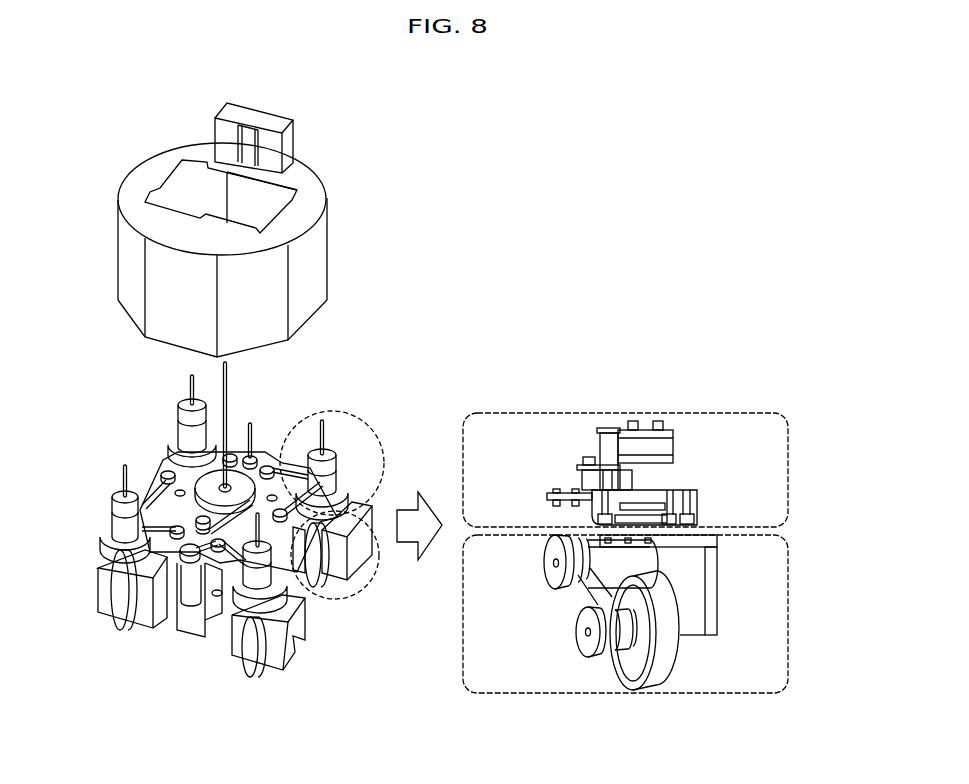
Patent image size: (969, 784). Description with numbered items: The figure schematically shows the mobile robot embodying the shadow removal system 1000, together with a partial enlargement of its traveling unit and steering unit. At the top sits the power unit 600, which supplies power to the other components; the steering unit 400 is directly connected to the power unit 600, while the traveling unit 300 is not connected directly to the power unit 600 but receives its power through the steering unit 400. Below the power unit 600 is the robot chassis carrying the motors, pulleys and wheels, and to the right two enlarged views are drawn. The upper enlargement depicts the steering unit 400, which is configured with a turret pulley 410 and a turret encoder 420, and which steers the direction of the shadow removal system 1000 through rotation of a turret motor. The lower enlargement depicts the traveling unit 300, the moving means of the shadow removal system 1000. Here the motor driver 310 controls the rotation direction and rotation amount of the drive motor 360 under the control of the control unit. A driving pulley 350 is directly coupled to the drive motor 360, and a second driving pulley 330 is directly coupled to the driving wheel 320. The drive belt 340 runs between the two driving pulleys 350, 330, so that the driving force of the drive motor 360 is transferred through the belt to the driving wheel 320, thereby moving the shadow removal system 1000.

The shadow removal system 1000 is at (72, 119).
The power unit 600 is at (308, 265).
The steering unit 400 is at (792, 462).
The turret pulley 410 is at (695, 488).
The turret encoder 420 is at (588, 480).
The traveling unit 300 is at (792, 600).
The motor driver 310 is at (702, 585).
The driving wheel 320 is at (672, 667).
The driving pulley 330 is at (583, 643).
The drive belt 340 is at (583, 600).
The driving pulley 350 is at (548, 555).
The drive motor 360 is at (607, 565).